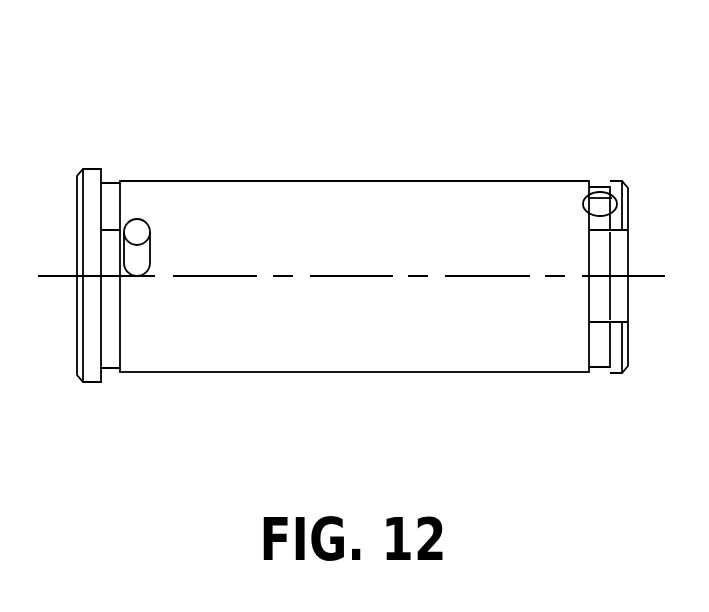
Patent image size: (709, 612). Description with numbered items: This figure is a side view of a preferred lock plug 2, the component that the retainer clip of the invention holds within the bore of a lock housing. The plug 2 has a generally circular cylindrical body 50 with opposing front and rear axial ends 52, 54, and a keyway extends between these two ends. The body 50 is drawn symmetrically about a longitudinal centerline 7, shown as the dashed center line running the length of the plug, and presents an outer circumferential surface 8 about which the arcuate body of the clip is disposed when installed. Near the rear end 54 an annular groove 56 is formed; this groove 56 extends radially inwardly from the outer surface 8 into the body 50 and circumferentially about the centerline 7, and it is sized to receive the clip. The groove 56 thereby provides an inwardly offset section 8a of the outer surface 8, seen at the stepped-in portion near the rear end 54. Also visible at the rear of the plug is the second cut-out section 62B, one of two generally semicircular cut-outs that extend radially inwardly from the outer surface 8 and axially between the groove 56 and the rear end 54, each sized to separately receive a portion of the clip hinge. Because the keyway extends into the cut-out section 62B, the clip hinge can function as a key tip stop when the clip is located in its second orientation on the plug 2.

The lock plug 2 is at (306, 110).
The outer circumferential surface 8 is at (406, 165).
The cylindrical body 50 is at (515, 160).
The front axial end 52 is at (75, 338).
The longitudinal centerline 7 is at (57, 273).
The rear axial end 54 is at (627, 343).
The inwardly offset section 8a is at (597, 187).
The second cut-out section 62B is at (612, 263).
The annular groove 56 is at (600, 383).